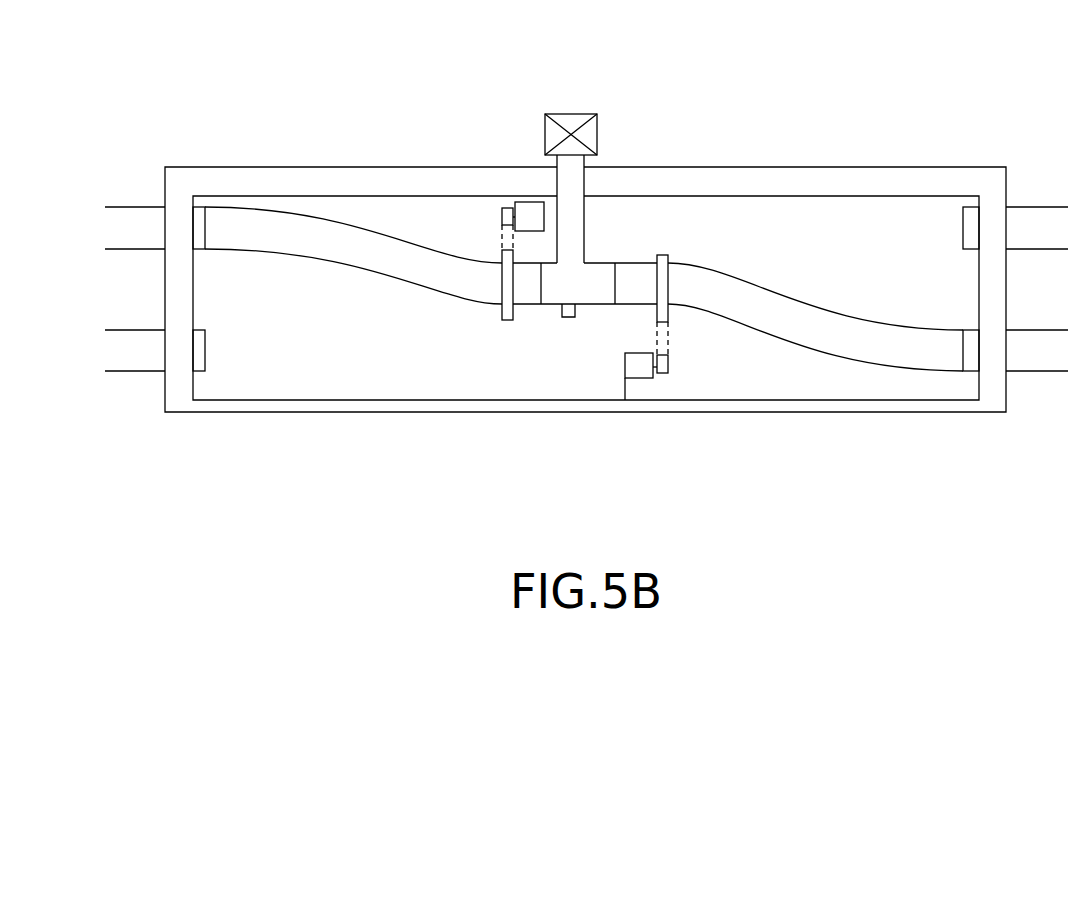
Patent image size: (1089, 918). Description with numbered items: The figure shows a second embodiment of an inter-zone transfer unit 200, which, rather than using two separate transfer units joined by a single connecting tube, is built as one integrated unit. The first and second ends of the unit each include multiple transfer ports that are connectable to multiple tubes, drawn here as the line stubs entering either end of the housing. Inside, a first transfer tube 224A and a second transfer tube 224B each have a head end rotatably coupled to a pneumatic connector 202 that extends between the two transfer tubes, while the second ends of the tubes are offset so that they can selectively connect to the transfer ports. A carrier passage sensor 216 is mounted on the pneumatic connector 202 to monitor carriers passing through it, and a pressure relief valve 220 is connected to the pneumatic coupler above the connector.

The inter-zone transfer unit 200 is at (475, 457).
The pneumatic connector 202 is at (598, 264).
The carrier passage sensor 216 is at (562, 318).
The pressure relief valve 220 is at (587, 132).
The first transfer tube 224A is at (373, 263).
The second transfer tube 224B is at (829, 314).